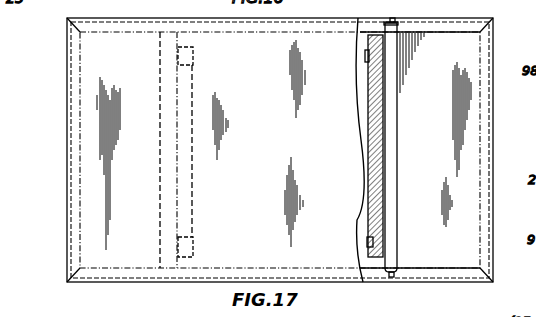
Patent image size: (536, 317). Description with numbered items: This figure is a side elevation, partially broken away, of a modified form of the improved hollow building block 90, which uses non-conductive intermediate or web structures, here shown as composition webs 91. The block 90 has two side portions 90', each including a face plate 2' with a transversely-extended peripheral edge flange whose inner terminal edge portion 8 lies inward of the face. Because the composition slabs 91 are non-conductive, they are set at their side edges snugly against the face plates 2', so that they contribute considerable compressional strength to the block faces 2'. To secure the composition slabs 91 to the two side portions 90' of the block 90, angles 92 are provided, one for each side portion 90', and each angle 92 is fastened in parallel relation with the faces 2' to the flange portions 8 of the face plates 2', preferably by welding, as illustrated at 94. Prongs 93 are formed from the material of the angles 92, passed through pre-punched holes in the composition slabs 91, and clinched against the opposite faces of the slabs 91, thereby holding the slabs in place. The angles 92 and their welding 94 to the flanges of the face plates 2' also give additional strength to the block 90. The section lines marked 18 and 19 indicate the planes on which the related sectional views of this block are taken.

The face plate 2' is at (272, 150).
The inner terminal edge portion 8 is at (426, 27).
The hollow building block 90 is at (259, 143).
The side portion 90' is at (278, 141).
The composition web 91 is at (178, 127).
The angle 92 is at (161, 172).
The prong 93 is at (193, 62).
The welding 94 is at (399, 6).
The section line 18- 18 is at (360, 133).
The section line 19- 19 is at (428, 0).